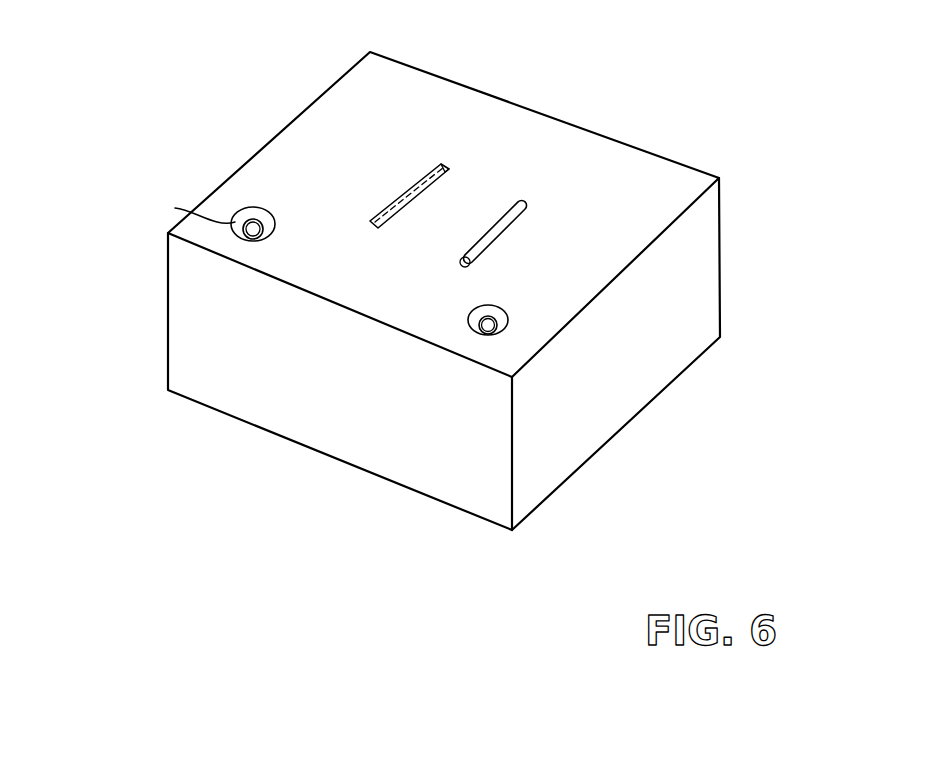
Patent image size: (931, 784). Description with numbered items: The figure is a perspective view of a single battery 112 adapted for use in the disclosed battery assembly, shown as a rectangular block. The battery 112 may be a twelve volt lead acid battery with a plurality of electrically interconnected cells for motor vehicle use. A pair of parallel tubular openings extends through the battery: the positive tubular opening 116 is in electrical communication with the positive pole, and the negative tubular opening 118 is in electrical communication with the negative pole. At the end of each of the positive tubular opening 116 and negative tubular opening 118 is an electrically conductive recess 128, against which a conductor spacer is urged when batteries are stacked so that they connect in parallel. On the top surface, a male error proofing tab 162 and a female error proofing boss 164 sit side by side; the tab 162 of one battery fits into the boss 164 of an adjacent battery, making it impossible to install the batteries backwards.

The battery 112 is at (670, 122).
The positive tubular opening 116 is at (175, 208).
The negative tubular opening 118 is at (476, 332).
The electrically conductive recess 128 is at (265, 218).
The male error proofing tab 162 is at (530, 203).
The female error proofing boss 164 is at (414, 176).